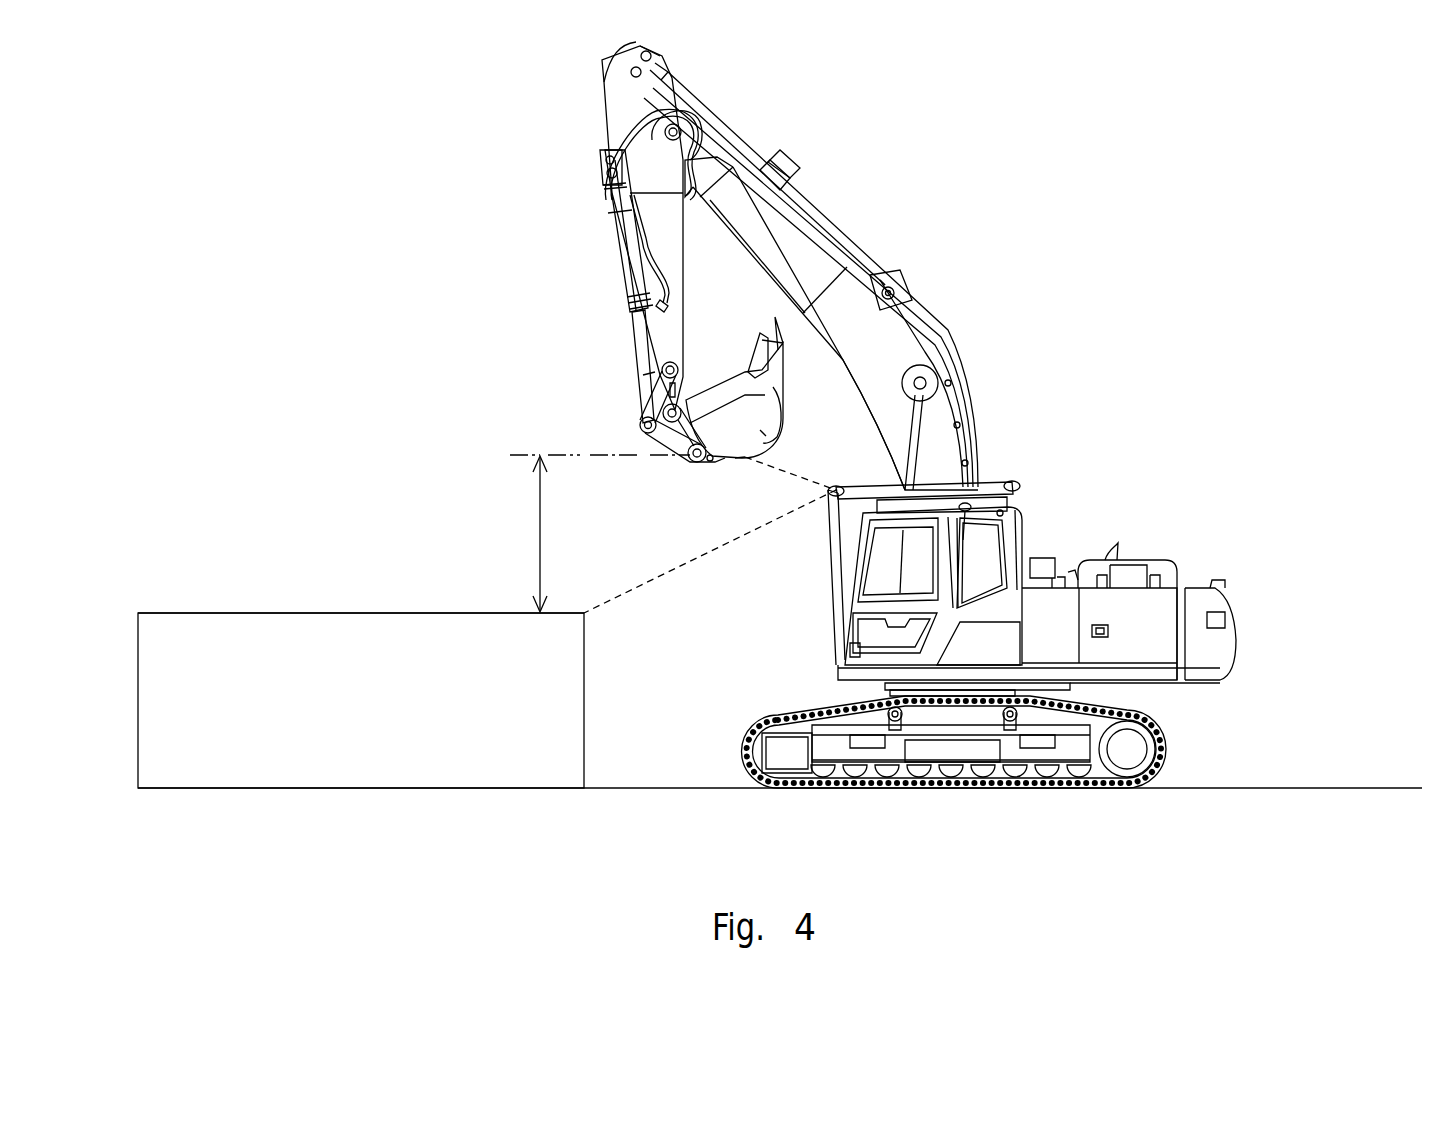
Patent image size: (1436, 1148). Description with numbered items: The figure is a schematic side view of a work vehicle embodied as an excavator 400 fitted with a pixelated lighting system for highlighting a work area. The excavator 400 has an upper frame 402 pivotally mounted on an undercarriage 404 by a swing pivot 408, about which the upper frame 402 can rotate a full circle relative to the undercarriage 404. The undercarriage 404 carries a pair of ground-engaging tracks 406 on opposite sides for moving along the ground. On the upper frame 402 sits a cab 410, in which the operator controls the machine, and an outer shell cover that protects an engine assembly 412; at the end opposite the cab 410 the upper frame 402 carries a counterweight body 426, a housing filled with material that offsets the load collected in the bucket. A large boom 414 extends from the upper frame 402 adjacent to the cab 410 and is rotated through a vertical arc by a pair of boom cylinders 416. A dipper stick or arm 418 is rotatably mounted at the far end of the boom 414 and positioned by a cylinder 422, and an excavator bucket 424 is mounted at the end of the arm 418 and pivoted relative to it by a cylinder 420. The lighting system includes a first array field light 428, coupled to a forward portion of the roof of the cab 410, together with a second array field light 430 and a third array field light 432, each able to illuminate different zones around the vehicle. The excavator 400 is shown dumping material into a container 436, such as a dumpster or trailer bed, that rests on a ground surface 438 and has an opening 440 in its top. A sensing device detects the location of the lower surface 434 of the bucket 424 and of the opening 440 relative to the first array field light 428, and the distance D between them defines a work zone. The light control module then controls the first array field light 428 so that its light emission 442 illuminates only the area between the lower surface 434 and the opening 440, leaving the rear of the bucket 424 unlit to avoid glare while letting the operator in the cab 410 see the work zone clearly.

The excavator 400 is at (1205, 230).
The upper frame 402 is at (1195, 550).
The undercarriage 404 is at (1175, 772).
The ground-engaging tracks 406 is at (740, 752).
The swing pivot 408 is at (955, 696).
The cab 410 is at (978, 558).
The engine assembly 412 is at (1146, 530).
The boom 414 is at (808, 253).
The boom cylinders 416 is at (925, 408).
The dipper stick or arm 418 is at (660, 258).
The cylinder 420 is at (623, 277).
The cylinder 422 is at (705, 113).
The excavator bucket 424 is at (742, 478).
The counterweight body 426 is at (1238, 655).
The first array field light 428 is at (837, 486).
The second array field light 430 is at (965, 511).
The third array field light 432 is at (1012, 481).
The lower surface 434 is at (732, 470).
The container 436 is at (215, 625).
The ground surface 438 is at (1352, 788).
The opening 440 is at (358, 600).
The light emission 442 is at (650, 590).